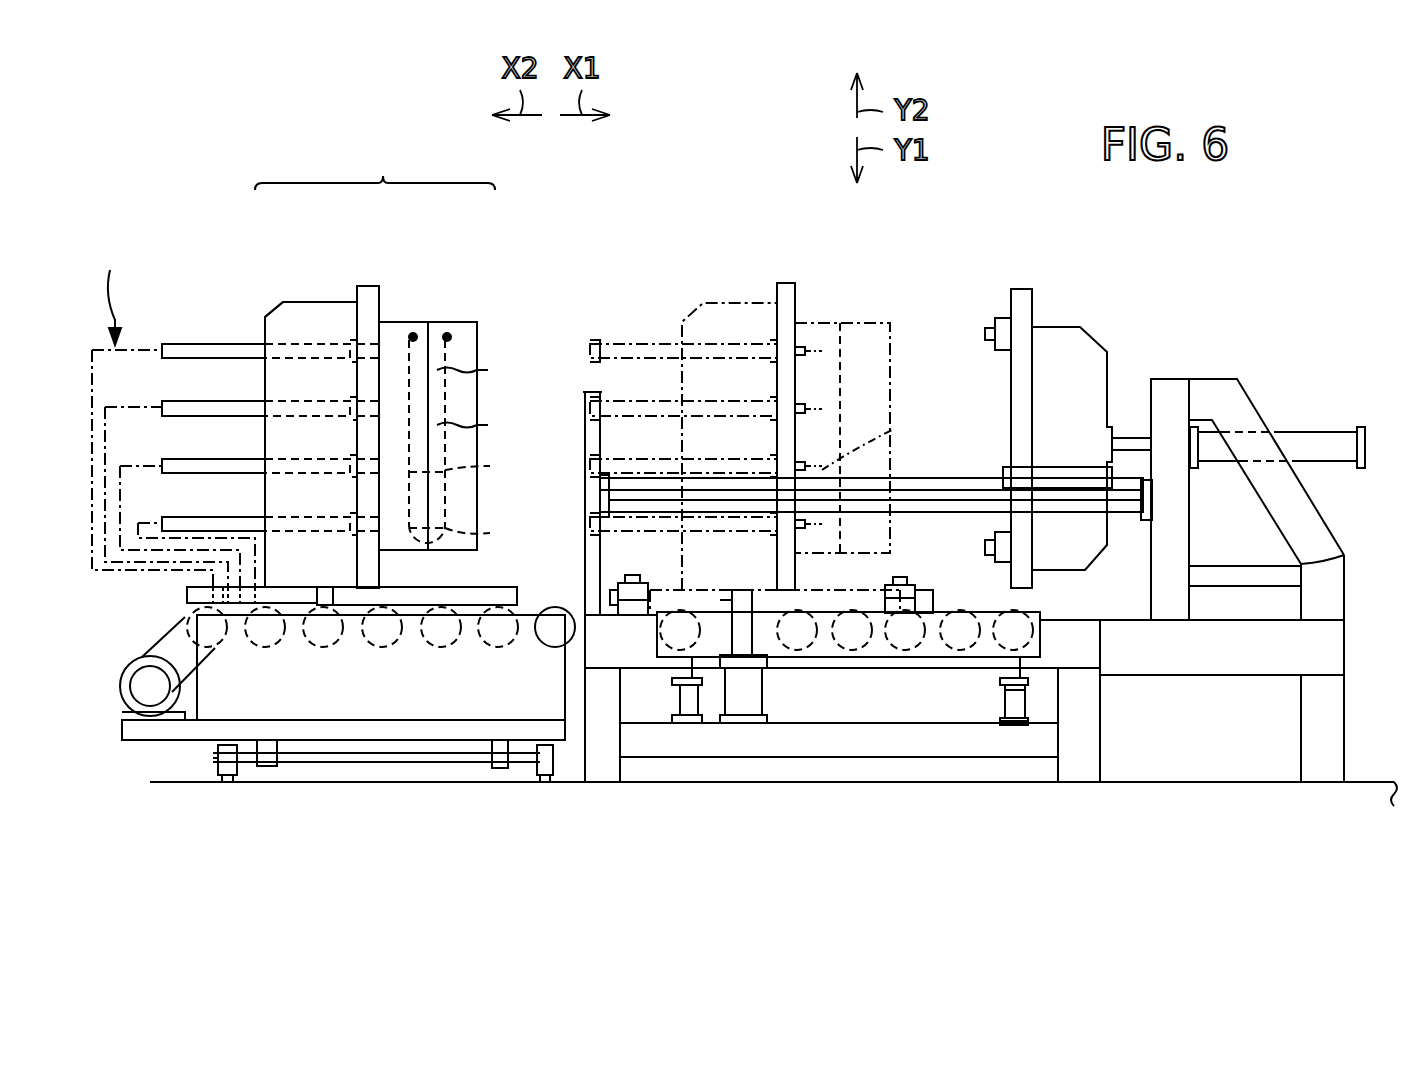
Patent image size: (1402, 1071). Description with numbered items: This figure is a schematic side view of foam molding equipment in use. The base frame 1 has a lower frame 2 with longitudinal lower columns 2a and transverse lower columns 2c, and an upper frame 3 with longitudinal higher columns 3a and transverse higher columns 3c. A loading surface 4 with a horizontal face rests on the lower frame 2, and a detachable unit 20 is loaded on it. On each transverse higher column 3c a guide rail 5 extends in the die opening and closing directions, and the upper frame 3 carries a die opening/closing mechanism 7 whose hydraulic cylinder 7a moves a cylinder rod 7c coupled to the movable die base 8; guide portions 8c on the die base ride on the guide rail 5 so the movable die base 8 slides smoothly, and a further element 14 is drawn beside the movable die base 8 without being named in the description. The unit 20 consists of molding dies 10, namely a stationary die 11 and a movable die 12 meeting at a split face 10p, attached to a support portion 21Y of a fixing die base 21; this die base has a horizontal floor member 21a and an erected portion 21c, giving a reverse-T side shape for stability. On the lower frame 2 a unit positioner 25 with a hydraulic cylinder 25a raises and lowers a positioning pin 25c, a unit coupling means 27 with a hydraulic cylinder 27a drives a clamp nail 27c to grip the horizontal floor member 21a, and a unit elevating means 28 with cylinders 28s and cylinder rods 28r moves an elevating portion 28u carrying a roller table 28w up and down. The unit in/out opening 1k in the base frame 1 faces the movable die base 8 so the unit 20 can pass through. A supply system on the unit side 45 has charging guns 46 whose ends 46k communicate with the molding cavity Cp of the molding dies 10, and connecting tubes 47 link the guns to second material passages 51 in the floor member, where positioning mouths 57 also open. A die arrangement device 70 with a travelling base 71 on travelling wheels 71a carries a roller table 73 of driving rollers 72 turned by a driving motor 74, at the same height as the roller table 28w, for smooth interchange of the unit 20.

The base frame 1 is at (1127, 636).
The unit in/out opening 1k is at (588, 392).
The lower frame 2 is at (1333, 650).
The longitudinal lower columns 2a is at (604, 738).
The transverse lower columns 2c is at (869, 765).
The upper frame 3 is at (585, 430).
The longitudinal higher columns 3a is at (600, 490).
The transverse higher columns 3c is at (978, 495).
The loading surface 4 is at (827, 610).
The guide rail 5 is at (952, 492).
The die opening/closing mechanism 7 is at (1343, 433).
The hydraulic cylinder 7a is at (1284, 435).
The cylinder rod 7c is at (1127, 442).
The movable die base 8 is at (1050, 336).
The guide portions 8c is at (1060, 478).
The molding dies 10 is at (428, 320).
The split face 10p is at (488, 370).
The stationary die 11 is at (412, 333).
The movable die 12 is at (448, 333).
The sensor 14 is at (1000, 334).
The unit 20 is at (383, 176).
The fixing die base 21 is at (312, 310).
The horizontal floor member 21a is at (418, 598).
The erected portion 21c is at (286, 304).
The support portion 21Y is at (368, 300).
The unit positioner 25 is at (731, 718).
The hydraulic cylinder 25a is at (762, 690).
The positioning pin 25c is at (742, 658).
The unit coupling means 27 is at (617, 588).
The hydraulic cylinder 27a is at (922, 590).
The clamp nail 27c is at (635, 578).
The unit elevating means 28 is at (688, 695).
The cylinder rod 28r is at (1010, 693).
The cylinders 28s is at (1020, 723).
The elevating portion 28u is at (932, 656).
The roller table 28w is at (662, 645).
The supply system on the unit side 45 is at (110, 292).
The charging guns 46 is at (178, 344).
The end of the charging gun 46k is at (676, 475).
The connecting tube 47 is at (92, 370).
The second material passages 51 is at (185, 597).
The positioning mouths 57 is at (722, 600).
The die arrangement device 70 is at (520, 660).
The travelling base 71 is at (345, 735).
The travelling wheel 71a is at (228, 778).
The driving rollers 72 is at (265, 648).
The roller table 73 is at (443, 648).
The driving motor 74 is at (152, 716).
The molding cavity Cp is at (478, 422).